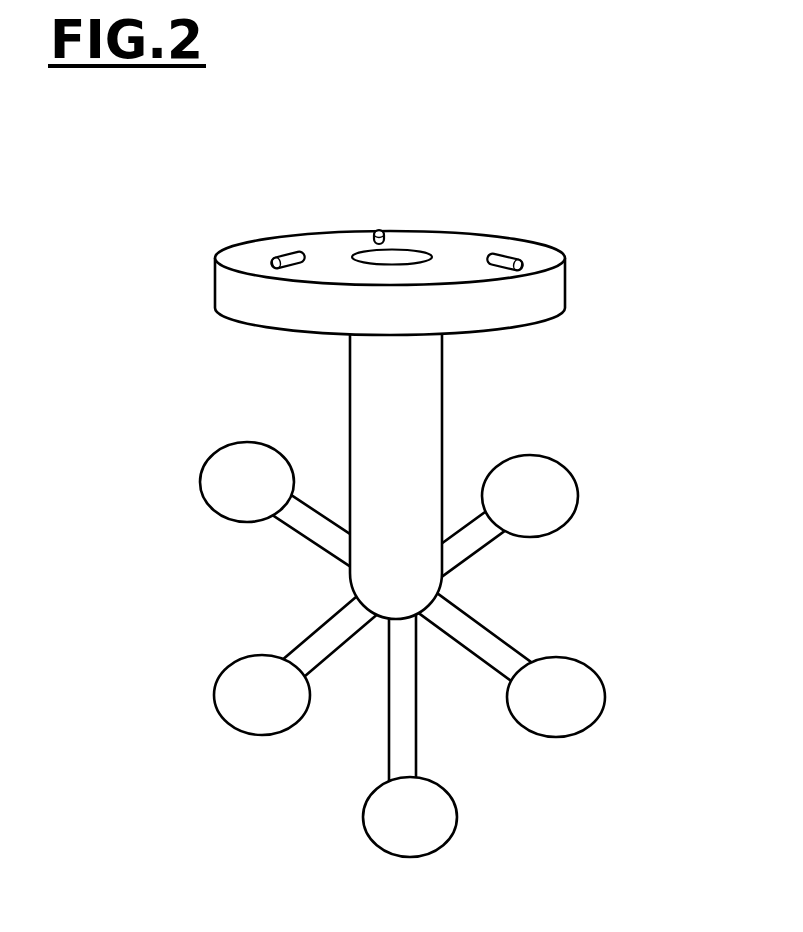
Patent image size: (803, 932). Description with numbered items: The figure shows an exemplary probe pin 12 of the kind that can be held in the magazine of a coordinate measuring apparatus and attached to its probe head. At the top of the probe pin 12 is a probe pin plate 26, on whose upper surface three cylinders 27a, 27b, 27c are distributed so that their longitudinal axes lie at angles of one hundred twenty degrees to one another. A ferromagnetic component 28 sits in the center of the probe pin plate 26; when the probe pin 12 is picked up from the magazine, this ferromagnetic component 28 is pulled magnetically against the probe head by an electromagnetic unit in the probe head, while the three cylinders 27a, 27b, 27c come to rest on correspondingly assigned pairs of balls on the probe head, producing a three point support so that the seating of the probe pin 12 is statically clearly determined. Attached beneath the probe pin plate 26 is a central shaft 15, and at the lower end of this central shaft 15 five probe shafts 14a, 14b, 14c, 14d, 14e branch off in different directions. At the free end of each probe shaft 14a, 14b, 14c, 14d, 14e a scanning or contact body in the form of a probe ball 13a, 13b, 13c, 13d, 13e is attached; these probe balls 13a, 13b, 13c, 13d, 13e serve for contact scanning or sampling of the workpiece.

The probe pin 12 is at (593, 367).
The probe ball 13a is at (548, 492).
The probe ball 13b is at (577, 683).
The probe ball 13c is at (428, 828).
The probe ball 13d is at (268, 710).
The probe ball 13e is at (242, 455).
The probe shaft 14a is at (462, 527).
The probe shaft 14b is at (497, 642).
The probe shaft 14c is at (402, 710).
The probe shaft 14d is at (323, 656).
The probe shaft 14e is at (322, 537).
The central shaft 15 is at (442, 375).
The probe pin plate 26 is at (540, 260).
The cylinder 27a is at (507, 260).
The cylinder 27b is at (292, 258).
The cylinder 27c is at (378, 230).
The ferromagnetic component 28 is at (403, 258).